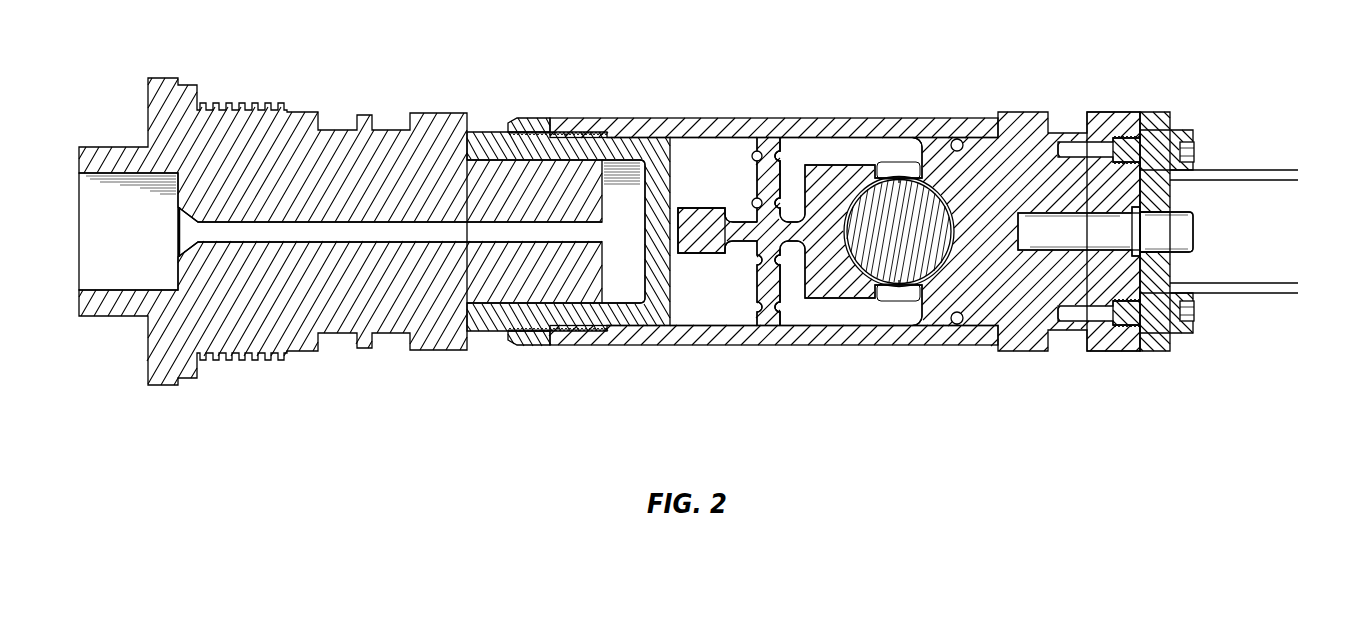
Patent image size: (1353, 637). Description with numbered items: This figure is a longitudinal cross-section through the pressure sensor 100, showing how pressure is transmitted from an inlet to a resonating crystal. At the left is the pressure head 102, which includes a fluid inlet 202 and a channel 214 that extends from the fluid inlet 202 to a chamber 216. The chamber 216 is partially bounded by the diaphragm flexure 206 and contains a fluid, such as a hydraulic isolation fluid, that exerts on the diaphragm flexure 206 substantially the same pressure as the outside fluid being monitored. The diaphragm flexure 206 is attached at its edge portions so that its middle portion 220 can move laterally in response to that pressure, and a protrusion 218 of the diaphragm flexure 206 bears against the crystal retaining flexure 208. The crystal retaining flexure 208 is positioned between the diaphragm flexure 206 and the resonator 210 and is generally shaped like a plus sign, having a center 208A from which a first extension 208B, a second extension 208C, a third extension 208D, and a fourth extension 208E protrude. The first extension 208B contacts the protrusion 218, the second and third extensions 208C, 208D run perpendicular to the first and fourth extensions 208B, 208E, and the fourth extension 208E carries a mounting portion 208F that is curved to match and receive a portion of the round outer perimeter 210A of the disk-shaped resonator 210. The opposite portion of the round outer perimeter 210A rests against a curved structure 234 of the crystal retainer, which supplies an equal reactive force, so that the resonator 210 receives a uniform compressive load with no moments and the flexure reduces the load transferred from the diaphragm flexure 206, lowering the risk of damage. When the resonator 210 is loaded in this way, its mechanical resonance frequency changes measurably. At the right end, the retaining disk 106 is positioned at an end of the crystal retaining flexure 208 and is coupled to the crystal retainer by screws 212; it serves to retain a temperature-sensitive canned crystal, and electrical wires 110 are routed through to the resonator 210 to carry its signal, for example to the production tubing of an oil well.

The pressure sensor 100 is at (1250, 70).
The pressure head 102 is at (430, 111).
The retaining disk 106 is at (1155, 355).
The electrical wires 110 is at (1262, 194).
The fluid inlet 202 is at (123, 192).
The diaphragm flexure 206 is at (623, 148).
The crystal retaining flexure 208 is at (790, 220).
The center 208A is at (752, 250).
The first extension 208B is at (700, 218).
The second extension 208C is at (768, 182).
The third extension 208D is at (765, 290).
The fourth extension 208E is at (795, 243).
The mounting portion 208F is at (858, 228).
The resonator 210 is at (900, 233).
The round outer perimeter 210A is at (927, 193).
The screws 212 is at (1197, 152).
The channel 214 is at (368, 232).
The chamber 216 is at (618, 242).
The protrusion 218 is at (680, 210).
The middle portion 220 is at (657, 240).
The curved structure 234 is at (960, 233).